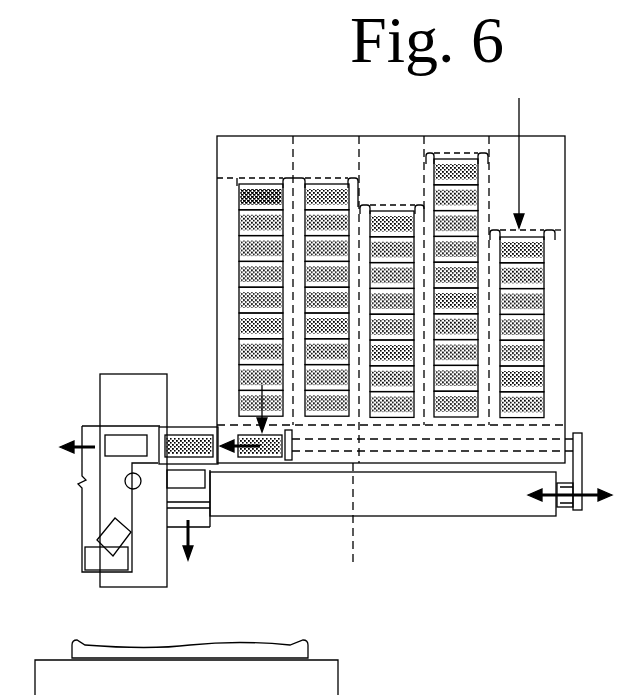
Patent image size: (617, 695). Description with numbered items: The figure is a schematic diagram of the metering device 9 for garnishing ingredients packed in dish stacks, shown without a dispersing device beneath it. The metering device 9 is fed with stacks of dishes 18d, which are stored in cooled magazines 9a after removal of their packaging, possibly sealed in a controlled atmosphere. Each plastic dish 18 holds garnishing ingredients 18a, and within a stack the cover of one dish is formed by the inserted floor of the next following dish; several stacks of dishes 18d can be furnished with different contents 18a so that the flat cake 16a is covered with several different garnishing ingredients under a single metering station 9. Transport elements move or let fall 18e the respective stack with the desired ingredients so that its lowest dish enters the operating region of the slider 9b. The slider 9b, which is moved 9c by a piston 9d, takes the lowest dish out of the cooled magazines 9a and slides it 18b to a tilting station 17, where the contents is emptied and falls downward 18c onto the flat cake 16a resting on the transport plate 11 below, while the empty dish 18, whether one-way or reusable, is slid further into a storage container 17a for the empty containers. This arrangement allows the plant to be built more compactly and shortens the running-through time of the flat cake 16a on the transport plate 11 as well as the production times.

The metering device 9 is at (190, 378).
The cooled magazine 9a is at (390, 150).
The slider 9b is at (391, 366).
The slider movement 9c is at (589, 510).
The piston 9d is at (402, 497).
The transport plate 11 is at (320, 679).
The flat cake 16a is at (260, 649).
The tilting station 17 is at (207, 472).
The storage container 17a is at (93, 572).
The dish 18 is at (257, 184).
The garnishing ingredients 18a is at (262, 199).
The sliding motion 18b is at (230, 452).
The downward falling of contents 18c is at (196, 545).
The stack of dishes 18d is at (526, 150).
The stack transport movement 18e is at (238, 393).